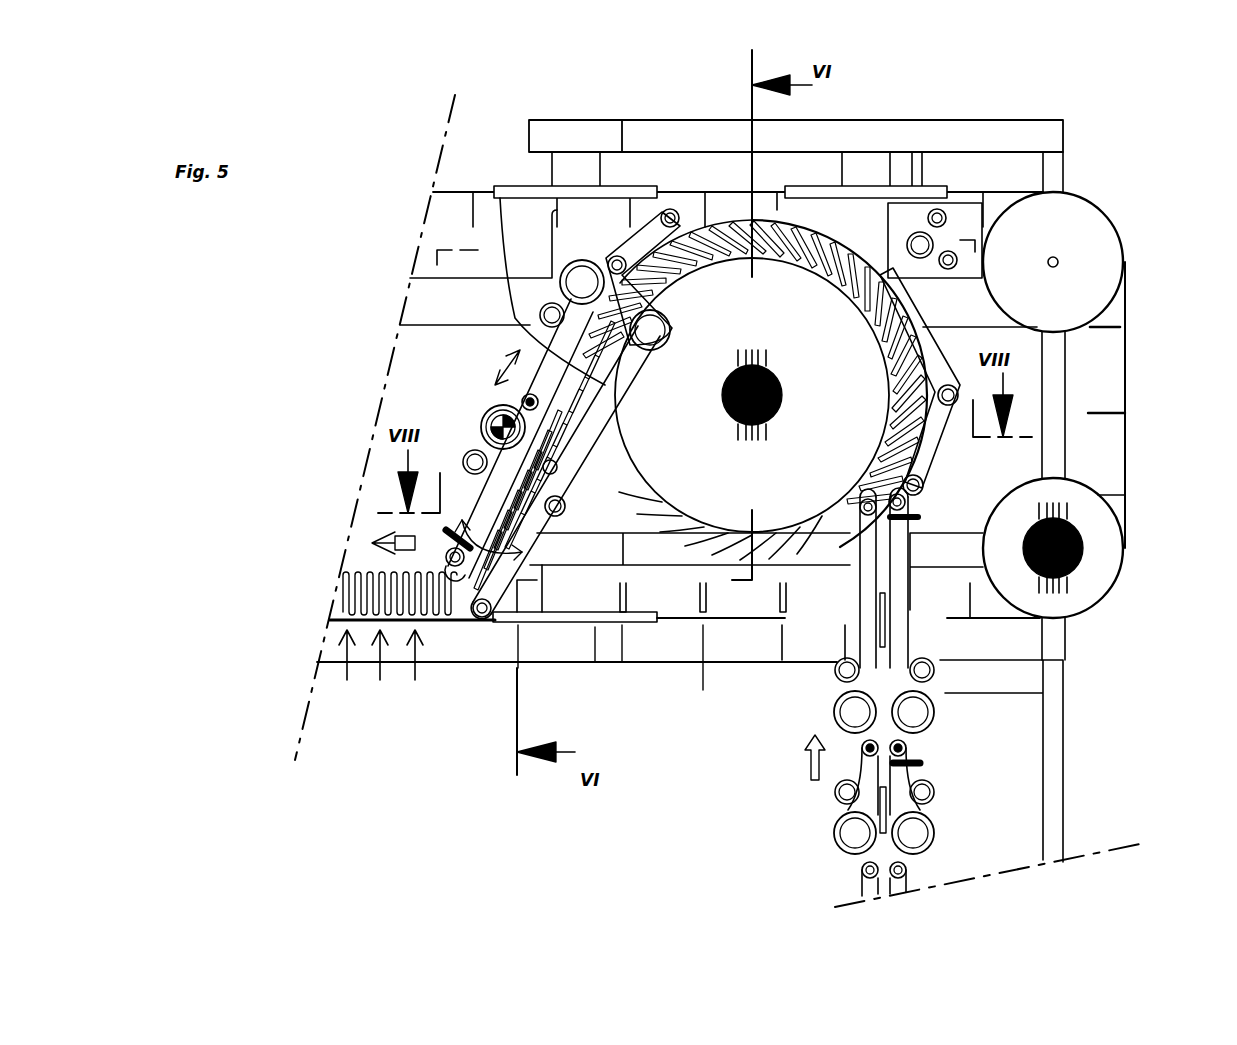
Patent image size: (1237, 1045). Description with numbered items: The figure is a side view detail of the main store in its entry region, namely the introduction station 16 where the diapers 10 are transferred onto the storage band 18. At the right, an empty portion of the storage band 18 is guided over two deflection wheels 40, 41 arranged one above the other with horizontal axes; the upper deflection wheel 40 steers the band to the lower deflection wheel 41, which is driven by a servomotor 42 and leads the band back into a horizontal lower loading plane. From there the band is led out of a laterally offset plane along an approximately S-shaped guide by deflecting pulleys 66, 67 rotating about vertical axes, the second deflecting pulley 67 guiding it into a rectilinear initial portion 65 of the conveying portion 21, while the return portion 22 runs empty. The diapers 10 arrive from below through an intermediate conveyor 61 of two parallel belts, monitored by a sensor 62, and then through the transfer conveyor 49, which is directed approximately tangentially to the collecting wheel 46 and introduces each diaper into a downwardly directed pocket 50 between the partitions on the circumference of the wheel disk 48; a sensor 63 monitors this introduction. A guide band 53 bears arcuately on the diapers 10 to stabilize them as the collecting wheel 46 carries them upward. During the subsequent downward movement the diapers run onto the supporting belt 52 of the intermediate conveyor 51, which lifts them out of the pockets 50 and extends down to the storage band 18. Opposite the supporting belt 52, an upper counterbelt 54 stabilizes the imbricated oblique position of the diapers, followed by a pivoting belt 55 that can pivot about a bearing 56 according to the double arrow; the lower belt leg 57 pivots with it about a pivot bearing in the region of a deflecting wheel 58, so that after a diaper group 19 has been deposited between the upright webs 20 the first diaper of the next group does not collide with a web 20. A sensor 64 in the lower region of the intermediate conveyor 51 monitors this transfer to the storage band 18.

The diaper 10 is at (833, 245).
The introduction station 16 is at (978, 100).
The storage band 18 is at (1012, 160).
The diaper group 19 is at (416, 682).
The web 20 is at (703, 625).
The conveying portion 21 is at (347, 682).
The return portion 22 is at (680, 190).
The upper deflection wheel 40 is at (1078, 225).
The lower deflection wheel 41 is at (1103, 548).
The servomotor 42 is at (1078, 568).
The collecting wheel 46 is at (730, 205).
The wheel disk 48 is at (838, 443).
The transfer conveyor 49 is at (922, 600).
The pocket 50 is at (923, 360).
The intermediate conveyor 51 is at (490, 400).
The supporting belt 52 is at (565, 395).
The guide band 53 is at (878, 282).
The upper counterbelt 54 is at (500, 197).
The pivoting belt 55 is at (470, 515).
The bearing 56 is at (481, 418).
The lower belt leg 57 is at (482, 618).
The deflecting wheel 58 is at (558, 517).
The intermediate conveyor 61 is at (952, 808).
The sensor 62 is at (922, 763).
The sensor 63 is at (920, 515).
The sensor 64 is at (448, 540).
The initial portion 65 is at (381, 682).
The deflecting pulley 66 is at (898, 192).
The deflecting pulley 67 is at (500, 186).